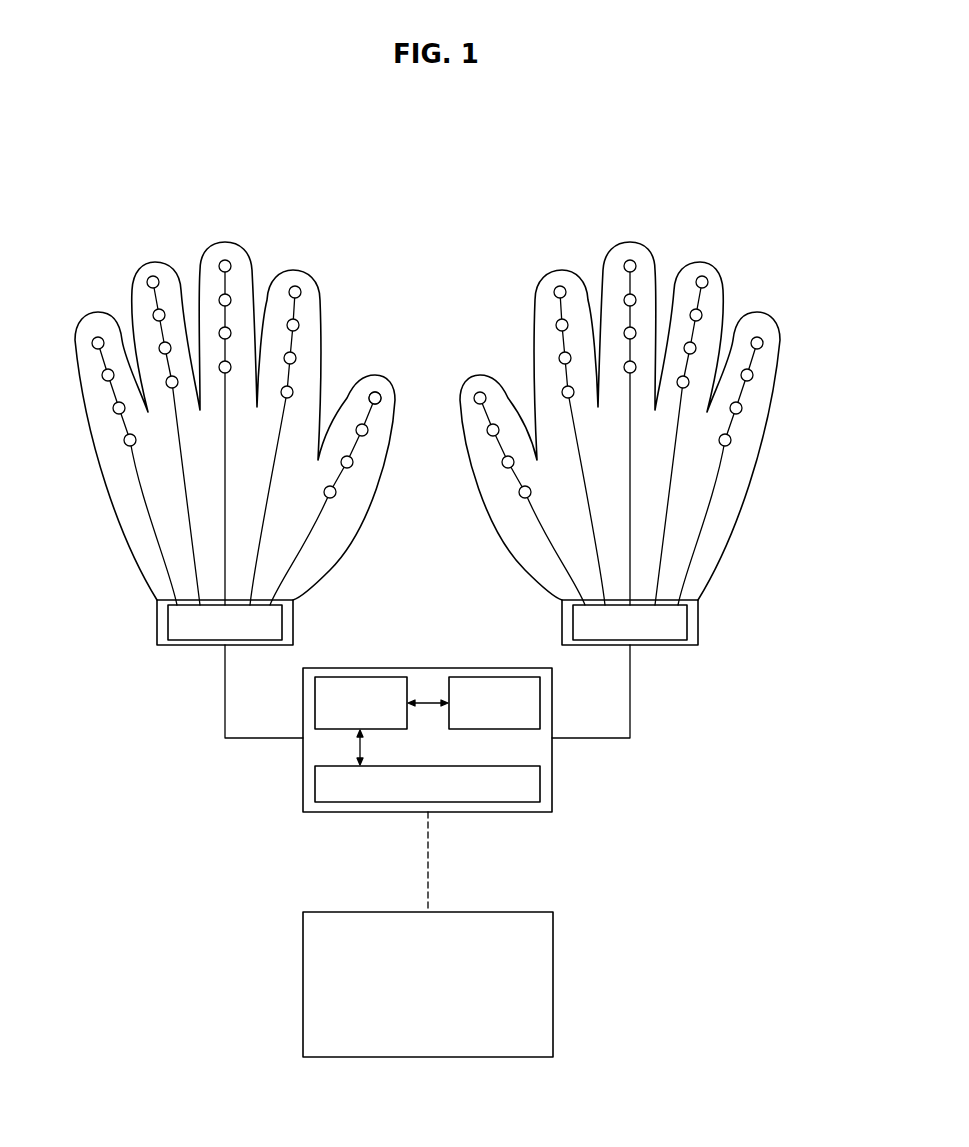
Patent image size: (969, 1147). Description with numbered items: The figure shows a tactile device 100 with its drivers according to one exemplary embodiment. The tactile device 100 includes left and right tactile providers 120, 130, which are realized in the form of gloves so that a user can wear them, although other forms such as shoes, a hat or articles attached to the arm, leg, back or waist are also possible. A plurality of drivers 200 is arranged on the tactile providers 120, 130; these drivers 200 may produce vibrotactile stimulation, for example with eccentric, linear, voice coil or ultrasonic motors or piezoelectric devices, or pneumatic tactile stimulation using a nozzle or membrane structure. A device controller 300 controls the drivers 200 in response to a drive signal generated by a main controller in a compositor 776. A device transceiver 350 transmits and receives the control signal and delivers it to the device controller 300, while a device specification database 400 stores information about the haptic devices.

The tactile device 100 is at (480, 226).
The left tactile provider 120 is at (343, 313).
The right tactile provider 130 is at (758, 296).
The driver 200 is at (376, 391).
The device controller 300 is at (361, 677).
The device specification database 400 is at (481, 677).
The device transceiver 350 is at (540, 783).
The compositor 776 is at (553, 990).